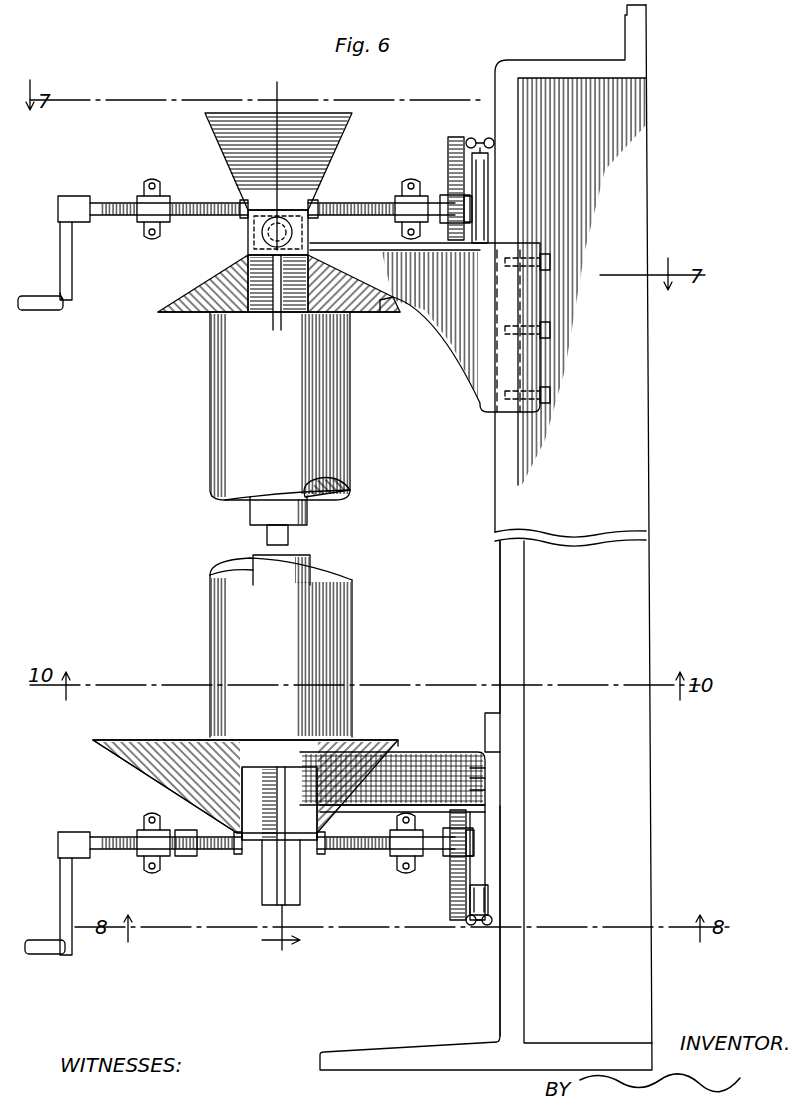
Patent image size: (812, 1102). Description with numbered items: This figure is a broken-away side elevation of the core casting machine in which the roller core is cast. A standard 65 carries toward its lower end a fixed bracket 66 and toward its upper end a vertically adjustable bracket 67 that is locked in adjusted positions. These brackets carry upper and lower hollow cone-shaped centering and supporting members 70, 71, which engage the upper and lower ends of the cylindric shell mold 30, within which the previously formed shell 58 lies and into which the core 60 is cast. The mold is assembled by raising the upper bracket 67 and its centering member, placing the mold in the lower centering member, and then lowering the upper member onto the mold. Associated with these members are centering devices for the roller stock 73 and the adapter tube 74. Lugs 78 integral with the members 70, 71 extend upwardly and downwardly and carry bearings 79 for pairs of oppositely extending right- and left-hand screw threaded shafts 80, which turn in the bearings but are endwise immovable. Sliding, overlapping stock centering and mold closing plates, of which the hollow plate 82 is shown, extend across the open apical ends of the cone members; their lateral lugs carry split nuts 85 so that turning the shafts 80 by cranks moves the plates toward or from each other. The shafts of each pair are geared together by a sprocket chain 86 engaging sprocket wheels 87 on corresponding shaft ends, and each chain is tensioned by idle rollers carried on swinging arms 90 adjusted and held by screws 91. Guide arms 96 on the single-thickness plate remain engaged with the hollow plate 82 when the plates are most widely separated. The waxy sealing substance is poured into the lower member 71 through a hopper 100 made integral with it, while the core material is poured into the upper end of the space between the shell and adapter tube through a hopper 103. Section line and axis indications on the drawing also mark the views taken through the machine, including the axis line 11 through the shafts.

The section line 11-11 / axis 11 is at (281, 527).
The shell mold 30 is at (336, 386).
The shell 58 is at (330, 508).
The core 60 is at (300, 518).
The standard 65 is at (638, 408).
The fixed bracket 66 is at (435, 752).
The vertically adjustable bracket 67 is at (448, 322).
The upper centering and supporting member 70 is at (190, 290).
The lower centering and supporting member 71 is at (370, 740).
The roller stock 73 is at (282, 552).
The adapter tube 74 is at (292, 530).
The lugs 78 is at (262, 280).
The bearings 79 is at (312, 862).
The screw threaded shafts 80 is at (195, 205).
The stock centering and mold closing plate 82 is at (320, 200).
The split nuts 85 is at (148, 184).
The sprocket chain 86 is at (448, 176).
The sprocket wheels 87 is at (450, 147).
The swinging arms 90 is at (490, 162).
The screws 91 is at (480, 138).
The guide arms 96 is at (195, 848).
The hopper 100 is at (138, 763).
The hopper 103 is at (328, 165).